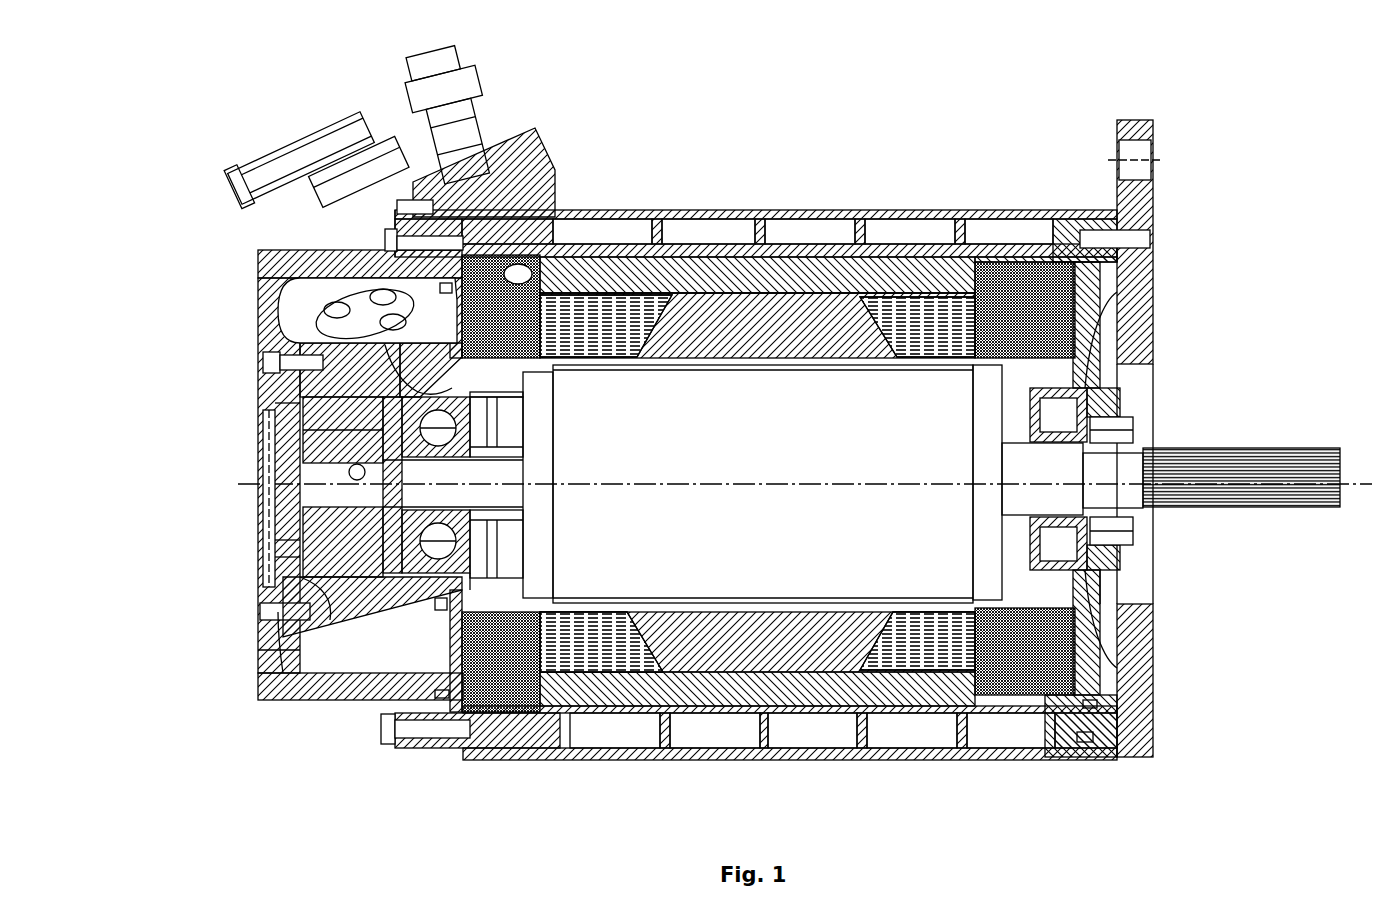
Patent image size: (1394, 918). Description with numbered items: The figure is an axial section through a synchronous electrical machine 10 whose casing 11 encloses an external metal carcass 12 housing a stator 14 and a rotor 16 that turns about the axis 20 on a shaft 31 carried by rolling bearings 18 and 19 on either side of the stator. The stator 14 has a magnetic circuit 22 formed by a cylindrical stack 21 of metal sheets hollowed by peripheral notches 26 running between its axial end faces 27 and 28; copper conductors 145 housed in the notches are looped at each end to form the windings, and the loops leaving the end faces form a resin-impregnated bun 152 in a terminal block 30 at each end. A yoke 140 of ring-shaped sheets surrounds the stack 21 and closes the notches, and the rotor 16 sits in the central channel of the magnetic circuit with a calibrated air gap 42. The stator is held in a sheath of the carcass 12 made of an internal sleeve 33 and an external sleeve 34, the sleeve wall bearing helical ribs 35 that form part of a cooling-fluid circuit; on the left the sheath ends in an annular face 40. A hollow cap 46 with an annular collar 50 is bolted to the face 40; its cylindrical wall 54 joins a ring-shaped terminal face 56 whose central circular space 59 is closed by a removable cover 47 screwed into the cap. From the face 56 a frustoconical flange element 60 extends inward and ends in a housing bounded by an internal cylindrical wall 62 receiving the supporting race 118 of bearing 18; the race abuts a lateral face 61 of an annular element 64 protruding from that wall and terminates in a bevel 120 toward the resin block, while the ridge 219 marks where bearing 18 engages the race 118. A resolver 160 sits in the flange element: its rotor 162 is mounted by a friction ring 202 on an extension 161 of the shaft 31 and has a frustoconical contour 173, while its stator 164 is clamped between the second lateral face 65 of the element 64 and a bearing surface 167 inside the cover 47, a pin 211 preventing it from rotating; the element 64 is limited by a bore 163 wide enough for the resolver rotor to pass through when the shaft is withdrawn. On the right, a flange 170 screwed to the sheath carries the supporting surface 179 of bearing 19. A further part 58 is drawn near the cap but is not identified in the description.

The synchronous electrical machine 10 is at (764, 160).
The casing 11 is at (826, 245).
The external metal carcass 12 is at (905, 213).
The stator 14 is at (812, 246).
The rotor 16 is at (655, 434).
The rolling bearing 18 is at (440, 588).
The rolling bearing 19 is at (1087, 390).
The axis 20 is at (1133, 425).
The cylindrical stack of magnetic metal sheets 21 is at (762, 339).
The magnetic circuit 22 is at (745, 296).
The peripheral notches 26 is at (607, 673).
The axial end face 27 is at (510, 713).
The axial end face 28 is at (997, 700).
The terminal block 30 is at (460, 305).
The shaft 31 is at (522, 484).
The internal sleeve 33 is at (612, 292).
The external sleeve 34 is at (700, 214).
The helical ribs 35 is at (663, 737).
The annular face 40 is at (387, 748).
The calibrated air gap 42 is at (1000, 601).
The hollow cap 46 is at (250, 288).
The removable cover 47 is at (260, 417).
The annular collar 50 is at (388, 198).
The cylindrical wall 54 is at (327, 700).
The terminal face 56 is at (260, 650).
The screw 58 is at (267, 617).
The circular space 59 is at (290, 540).
The flange element 60 is at (258, 333).
The lateral face 61 is at (500, 420).
The internal cylindrical wall 62 is at (478, 572).
The annular element 64 is at (381, 338).
The second lateral face 65 is at (297, 460).
The supporting race 118 is at (527, 417).
The bevel 120 is at (500, 570).
The yoke 140 is at (728, 289).
The copper conductors 145 is at (915, 300).
The bun 152 is at (460, 650).
The resolver 160 is at (294, 557).
The extension 161 is at (327, 477).
The resolver rotor 162 is at (330, 527).
The bore 163 is at (420, 507).
The resolver stator 164 is at (303, 420).
The bearing surface 167 is at (277, 403).
The flange 170 is at (1115, 372).
The frustoconical contour 173 is at (327, 633).
The supporting surface 179 is at (1143, 567).
The friction ring 202 is at (387, 472).
The pin 211 is at (385, 592).
The ridge 219 is at (496, 381).